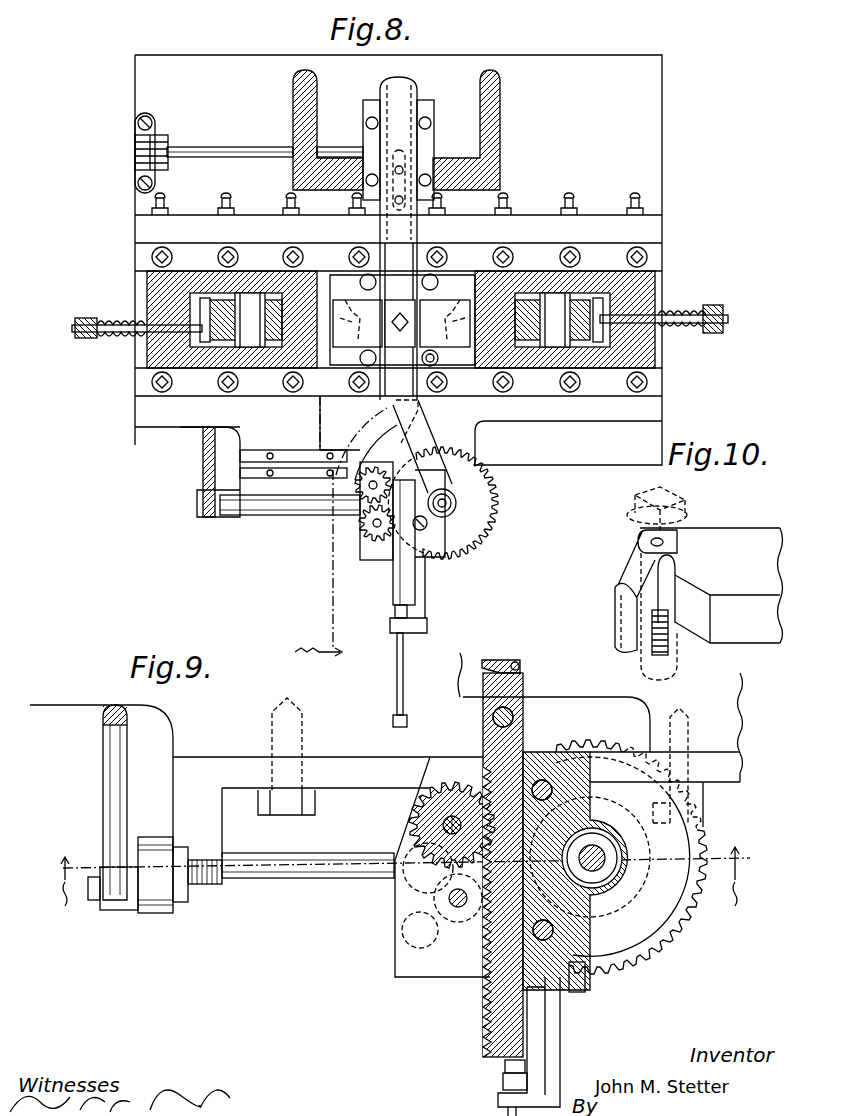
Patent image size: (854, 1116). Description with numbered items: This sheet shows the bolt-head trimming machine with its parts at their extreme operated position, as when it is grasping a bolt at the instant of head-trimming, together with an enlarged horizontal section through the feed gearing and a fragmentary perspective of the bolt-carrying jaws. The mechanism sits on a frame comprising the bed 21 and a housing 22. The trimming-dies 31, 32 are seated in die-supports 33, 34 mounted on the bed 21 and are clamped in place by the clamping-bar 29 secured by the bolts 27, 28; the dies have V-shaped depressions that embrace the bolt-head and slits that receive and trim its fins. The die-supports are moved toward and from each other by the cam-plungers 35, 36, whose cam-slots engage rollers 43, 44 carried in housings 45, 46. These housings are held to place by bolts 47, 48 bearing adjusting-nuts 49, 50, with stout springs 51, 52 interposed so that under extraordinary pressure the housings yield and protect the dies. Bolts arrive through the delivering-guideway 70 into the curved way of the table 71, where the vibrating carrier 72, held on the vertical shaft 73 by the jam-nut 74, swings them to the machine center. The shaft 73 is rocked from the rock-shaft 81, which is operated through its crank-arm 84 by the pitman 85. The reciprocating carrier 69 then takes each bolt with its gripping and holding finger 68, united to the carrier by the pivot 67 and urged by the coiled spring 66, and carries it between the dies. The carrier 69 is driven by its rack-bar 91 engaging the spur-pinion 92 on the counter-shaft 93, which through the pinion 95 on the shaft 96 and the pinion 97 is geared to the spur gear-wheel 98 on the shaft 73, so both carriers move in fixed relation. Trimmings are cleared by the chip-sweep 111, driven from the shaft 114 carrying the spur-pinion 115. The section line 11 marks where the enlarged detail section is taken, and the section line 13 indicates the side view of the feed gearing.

In FIG. 8, the bed 21 is at (162, 420).
In FIG. 9, the bed 21 is at (713, 708).
In FIG. 8, the slide bar 13 is at (380, 250).
In FIG. 8, the housing 22 is at (497, 137).
In FIG. 8, the bolt 27 is at (423, 350).
In FIG. 8, the bolt 28 is at (357, 377).
In FIG. 8, the clamping-bar 29 is at (450, 350).
In FIG. 8, the trimming-die 31 is at (440, 323).
In FIG. 8, the trimming-die 32 is at (401, 320).
In FIG. 8, the die-support 33 is at (543, 357).
In FIG. 8, the die-support 34 is at (157, 280).
In FIG. 8, the cam-plunger 35 is at (583, 330).
In FIG. 8, the cam-plunger 36 is at (220, 330).
In FIG. 8, the roller 43 is at (543, 303).
In FIG. 8, the roller 44 is at (235, 310).
In FIG. 8, the housing 45 is at (647, 355).
In FIG. 8, the housing 46 is at (190, 300).
In FIG. 8, the bolt 47 is at (728, 322).
In FIG. 8, the bolt 48 is at (72, 327).
In FIG. 8, the adjusting-nut 49 is at (720, 310).
In FIG. 8, the adjusting-nut 50 is at (88, 338).
In FIG. 8, the spring 51 is at (688, 310).
In FIG. 8, the spring 52 is at (130, 345).
In FIG. 8, the reciprocating carrier 69 is at (402, 573).
In FIG. 9, the reciprocating carrier 69 is at (523, 690).
In FIG. 10, the reciprocating carrier 69 is at (711, 585).
In FIG. 8, the delivering-guideway 70 is at (282, 472).
In FIG. 8, the table 71 is at (353, 435).
In FIG. 8, the vibrating carrier 72 is at (420, 442).
In FIG. 8, the vertical shaft 73 is at (445, 513).
In FIG. 9, the vertical shaft 73 is at (595, 897).
In FIG. 8, the jam-nut 74 is at (450, 498).
In FIG. 8, the rock-shaft 81 is at (295, 500).
In FIG. 9, the rock-shaft 81 is at (288, 878).
In FIG. 9, the crank-arm 84 is at (160, 913).
In FIG. 8, the pitman 85 is at (203, 462).
In FIG. 9, the pitman 85 is at (103, 790).
In FIG. 9, the rack-bar 91 is at (487, 1020).
In FIG. 8, the spur-pinion 92 is at (360, 495).
In FIG. 9, the spur-pinion 92 is at (410, 820).
In FIG. 9, the counter-shaft 93 is at (448, 783).
In FIG. 9, the pinion 95 is at (402, 922).
In FIG. 8, the shaft 96 is at (373, 525).
In FIG. 9, the shaft 96 is at (455, 907).
In FIG. 9, the pinion 97 is at (403, 890).
In FIG. 8, the spur gear-wheel 98 is at (493, 521).
In FIG. 9, the spur gear-wheel 98 is at (623, 980).
In FIG. 8, the chip-sweep 111 is at (425, 215).
In FIG. 8, the shaft 114 is at (223, 153).
In FIG. 8, the spur-pinion 115 is at (170, 137).
In FIG. 9, the section line 11 is at (398, 876).
In FIG. 10, the coiled spring 66 is at (666, 628).
In FIG. 9, the pivot 67 is at (522, 663).
In FIG. 10, the pivot 67 is at (668, 655).
In FIG. 9, the gripping and holding finger 68 is at (492, 658).
In FIG. 10, the gripping and holding finger 68 is at (623, 585).